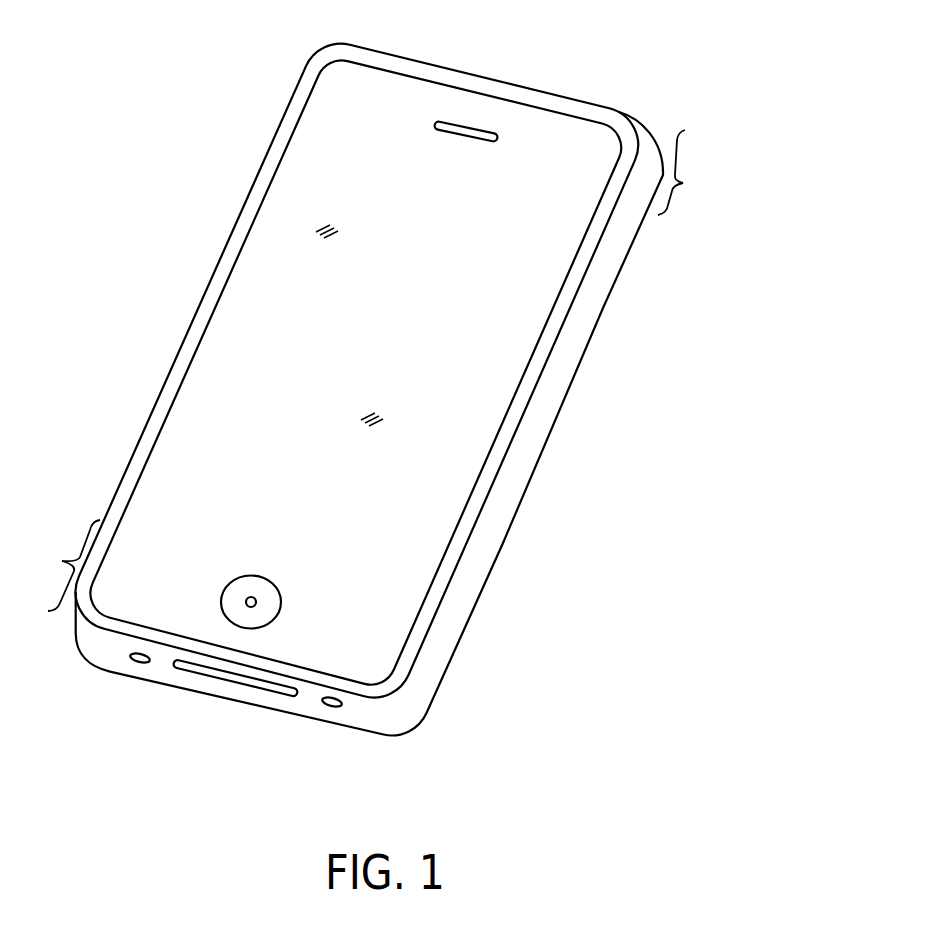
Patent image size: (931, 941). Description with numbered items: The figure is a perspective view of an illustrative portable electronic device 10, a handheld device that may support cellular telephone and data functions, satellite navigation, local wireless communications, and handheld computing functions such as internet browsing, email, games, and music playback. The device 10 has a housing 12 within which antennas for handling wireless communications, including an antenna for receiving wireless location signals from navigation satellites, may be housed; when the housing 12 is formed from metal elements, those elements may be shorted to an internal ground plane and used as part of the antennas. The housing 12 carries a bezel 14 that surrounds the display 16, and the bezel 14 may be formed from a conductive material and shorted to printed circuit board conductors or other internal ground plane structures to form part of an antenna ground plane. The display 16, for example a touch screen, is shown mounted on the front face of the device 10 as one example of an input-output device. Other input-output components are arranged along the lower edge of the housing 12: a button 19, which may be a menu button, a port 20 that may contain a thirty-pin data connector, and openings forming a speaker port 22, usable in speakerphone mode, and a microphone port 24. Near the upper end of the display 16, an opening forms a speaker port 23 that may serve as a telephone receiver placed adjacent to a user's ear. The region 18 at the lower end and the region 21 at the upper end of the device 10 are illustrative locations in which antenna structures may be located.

The portable electronic device 10 is at (702, 86).
The housing 12 is at (490, 540).
The bezel 14 is at (212, 285).
The display 16 is at (567, 227).
The region 18 is at (63, 565).
The button 19 is at (242, 630).
The port 20 is at (270, 692).
The region 21 is at (688, 172).
The speaker port 22 is at (138, 664).
The speaker port 23 is at (463, 127).
The microphone port 24 is at (332, 707).